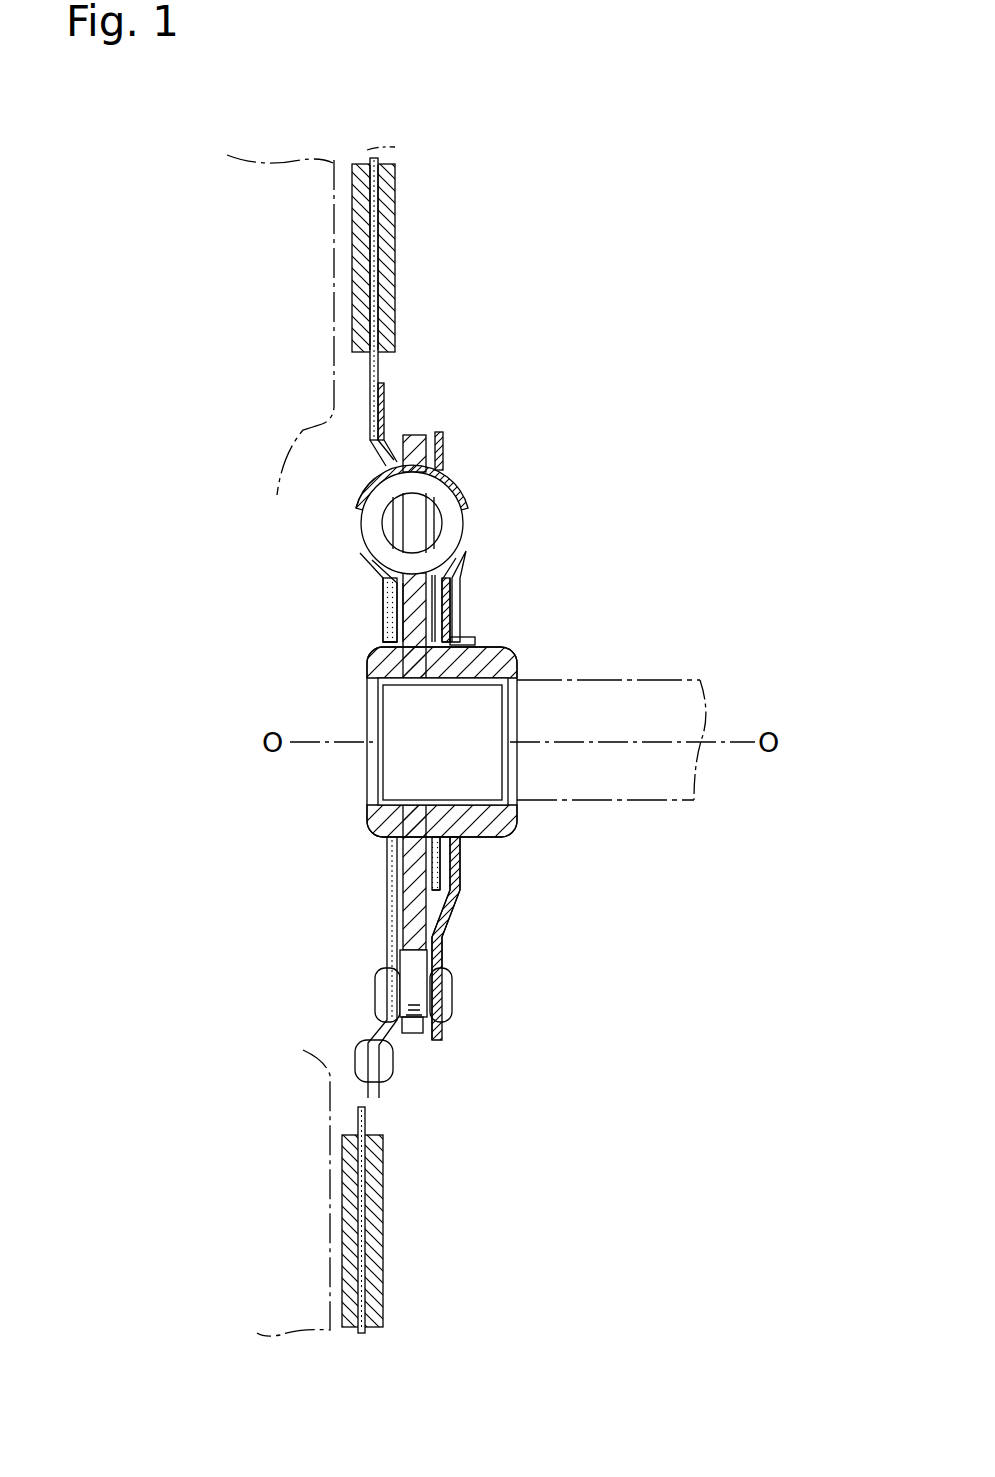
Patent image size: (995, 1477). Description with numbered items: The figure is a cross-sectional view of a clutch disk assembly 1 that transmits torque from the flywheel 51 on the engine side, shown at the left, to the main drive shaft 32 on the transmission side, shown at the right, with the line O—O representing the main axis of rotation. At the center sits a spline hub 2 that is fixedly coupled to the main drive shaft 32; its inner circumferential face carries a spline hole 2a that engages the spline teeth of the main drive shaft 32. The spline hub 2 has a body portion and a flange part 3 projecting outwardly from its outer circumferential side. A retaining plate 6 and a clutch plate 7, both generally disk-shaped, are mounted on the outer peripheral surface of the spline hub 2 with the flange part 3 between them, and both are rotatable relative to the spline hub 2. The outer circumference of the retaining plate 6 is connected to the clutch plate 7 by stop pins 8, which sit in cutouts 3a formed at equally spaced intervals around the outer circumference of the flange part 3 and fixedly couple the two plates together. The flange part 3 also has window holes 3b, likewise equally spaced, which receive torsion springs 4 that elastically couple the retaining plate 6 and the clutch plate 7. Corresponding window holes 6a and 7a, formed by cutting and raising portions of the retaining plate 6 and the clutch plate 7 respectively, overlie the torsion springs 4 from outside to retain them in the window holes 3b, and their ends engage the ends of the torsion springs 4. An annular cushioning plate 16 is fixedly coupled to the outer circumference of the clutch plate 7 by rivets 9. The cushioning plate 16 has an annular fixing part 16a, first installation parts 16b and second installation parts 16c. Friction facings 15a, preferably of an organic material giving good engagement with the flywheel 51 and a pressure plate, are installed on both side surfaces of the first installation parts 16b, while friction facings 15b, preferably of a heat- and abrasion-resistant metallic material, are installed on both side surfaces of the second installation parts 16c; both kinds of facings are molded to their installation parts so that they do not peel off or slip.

The clutch disk assembly 1 is at (590, 452).
The spline hub 2 is at (510, 660).
The spline hole 2a is at (467, 685).
The flange part 3 is at (420, 430).
The cutouts 3a is at (413, 1025).
The window holes 3b is at (437, 478).
The torsion springs 4 is at (453, 530).
The retaining plate 6 is at (453, 605).
The window holes 6a is at (467, 497).
The clutch plate 7 is at (387, 602).
The window holes 7a is at (392, 480).
The stop pins 8 is at (455, 988).
The rivets 9 is at (355, 1055).
The friction facings 15a is at (395, 212).
The friction facings 15b is at (345, 1227).
The cushioning plate 16 is at (366, 372).
The annular fixing part 16a is at (384, 398).
The first installation parts 16b is at (393, 272).
The second installation parts 16c is at (383, 1187).
The main drive shaft 32 is at (615, 680).
The flywheel 51 is at (395, 147).